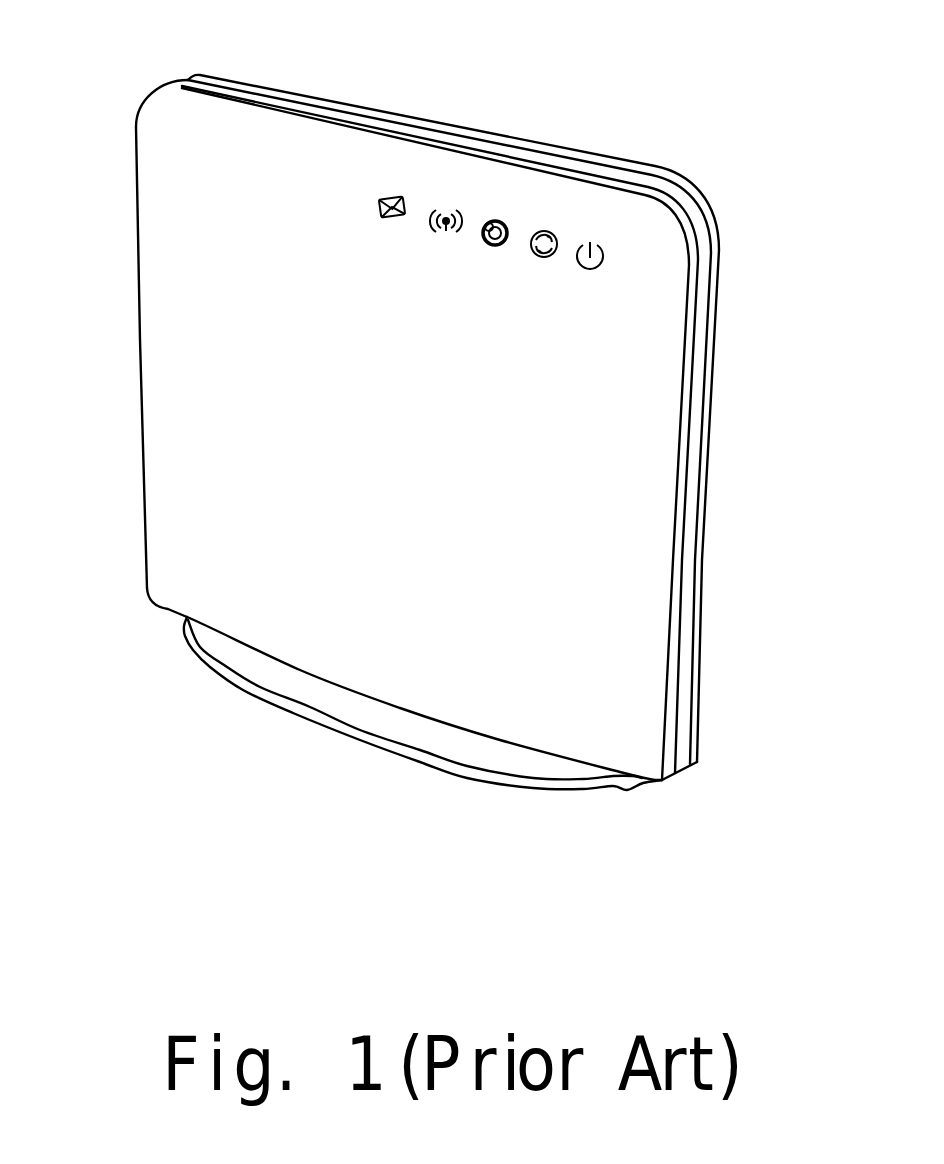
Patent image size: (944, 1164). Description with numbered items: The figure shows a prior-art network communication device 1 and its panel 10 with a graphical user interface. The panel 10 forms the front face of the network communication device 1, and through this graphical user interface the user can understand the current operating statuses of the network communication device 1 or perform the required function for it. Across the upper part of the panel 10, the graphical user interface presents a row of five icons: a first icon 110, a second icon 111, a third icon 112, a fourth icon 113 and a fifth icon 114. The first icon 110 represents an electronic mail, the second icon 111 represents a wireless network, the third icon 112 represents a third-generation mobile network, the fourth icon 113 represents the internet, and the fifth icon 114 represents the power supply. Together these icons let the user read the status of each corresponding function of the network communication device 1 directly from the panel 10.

The network communication device 1 is at (672, 60).
The panel 10 is at (187, 323).
The first icon 110 is at (393, 196).
The second icon 111 is at (438, 223).
The third icon 112 is at (491, 221).
The fourth icon 113 is at (543, 258).
The fifth icon 114 is at (604, 251).